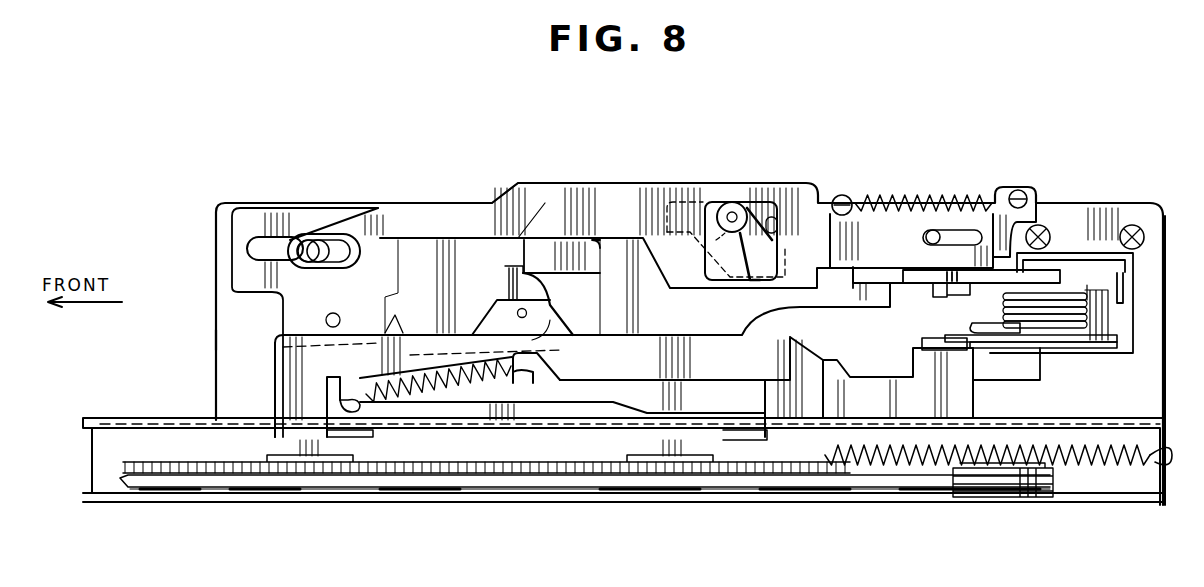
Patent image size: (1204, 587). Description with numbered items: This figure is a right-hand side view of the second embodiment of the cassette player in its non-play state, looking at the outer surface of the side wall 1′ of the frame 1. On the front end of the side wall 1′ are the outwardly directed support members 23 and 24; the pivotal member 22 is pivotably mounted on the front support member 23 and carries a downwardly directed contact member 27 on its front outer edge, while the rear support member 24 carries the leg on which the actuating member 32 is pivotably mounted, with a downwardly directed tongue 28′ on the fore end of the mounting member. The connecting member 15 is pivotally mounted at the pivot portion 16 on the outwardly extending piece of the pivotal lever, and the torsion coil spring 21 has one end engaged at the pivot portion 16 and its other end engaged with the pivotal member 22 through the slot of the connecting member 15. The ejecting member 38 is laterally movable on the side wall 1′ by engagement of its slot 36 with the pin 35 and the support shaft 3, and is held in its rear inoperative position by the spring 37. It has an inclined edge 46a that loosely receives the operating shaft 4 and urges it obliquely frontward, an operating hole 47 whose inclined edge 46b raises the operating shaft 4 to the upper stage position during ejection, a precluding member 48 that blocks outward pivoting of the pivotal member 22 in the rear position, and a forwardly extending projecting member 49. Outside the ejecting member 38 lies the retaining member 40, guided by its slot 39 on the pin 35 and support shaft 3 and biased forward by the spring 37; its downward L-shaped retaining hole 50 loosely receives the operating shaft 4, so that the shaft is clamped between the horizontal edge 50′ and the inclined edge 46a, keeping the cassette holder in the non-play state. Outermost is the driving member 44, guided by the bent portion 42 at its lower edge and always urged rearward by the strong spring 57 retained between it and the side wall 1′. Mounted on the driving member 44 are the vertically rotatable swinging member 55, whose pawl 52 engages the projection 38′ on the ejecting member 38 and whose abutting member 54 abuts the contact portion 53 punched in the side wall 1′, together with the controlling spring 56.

The frame 1 is at (157, 420).
The side wall 1′ is at (230, 339).
The support shaft 3 is at (930, 242).
The operating shaft 4 is at (732, 212).
The connecting member 15 is at (1130, 336).
The pivot portion 16 is at (1112, 312).
The torsion coil spring 21 is at (1060, 320).
The pivotal member 22 is at (1026, 350).
The support member 23 is at (1100, 348).
The support member 24 is at (982, 276).
The contact member 27 is at (936, 340).
The tongue 28′ is at (936, 292).
The actuating member 32 is at (1058, 259).
The pin 35 is at (315, 249).
The slot 36 is at (267, 243).
The spring 37 is at (906, 200).
The ejecting member 38 is at (245, 263).
The projection 38′ is at (331, 314).
The slot 39 is at (340, 247).
The retaining member 40 is at (618, 197).
The bent portion 42 is at (375, 437).
The driving member 44 is at (673, 357).
The inclined edge 46a is at (746, 230).
The inclined edge 46b is at (738, 285).
The operating hole 47 is at (682, 205).
The precluding member 48 is at (920, 377).
The projecting member 49 is at (873, 298).
The retaining hole 50 is at (778, 232).
The horizontal edge 50′ is at (718, 240).
The pawl 52 is at (400, 325).
The contact portion 53 is at (523, 250).
The abutting member 54 is at (505, 272).
The swinging member 55 is at (532, 292).
The controlling spring 56 is at (513, 372).
The strong spring 57 is at (1115, 465).